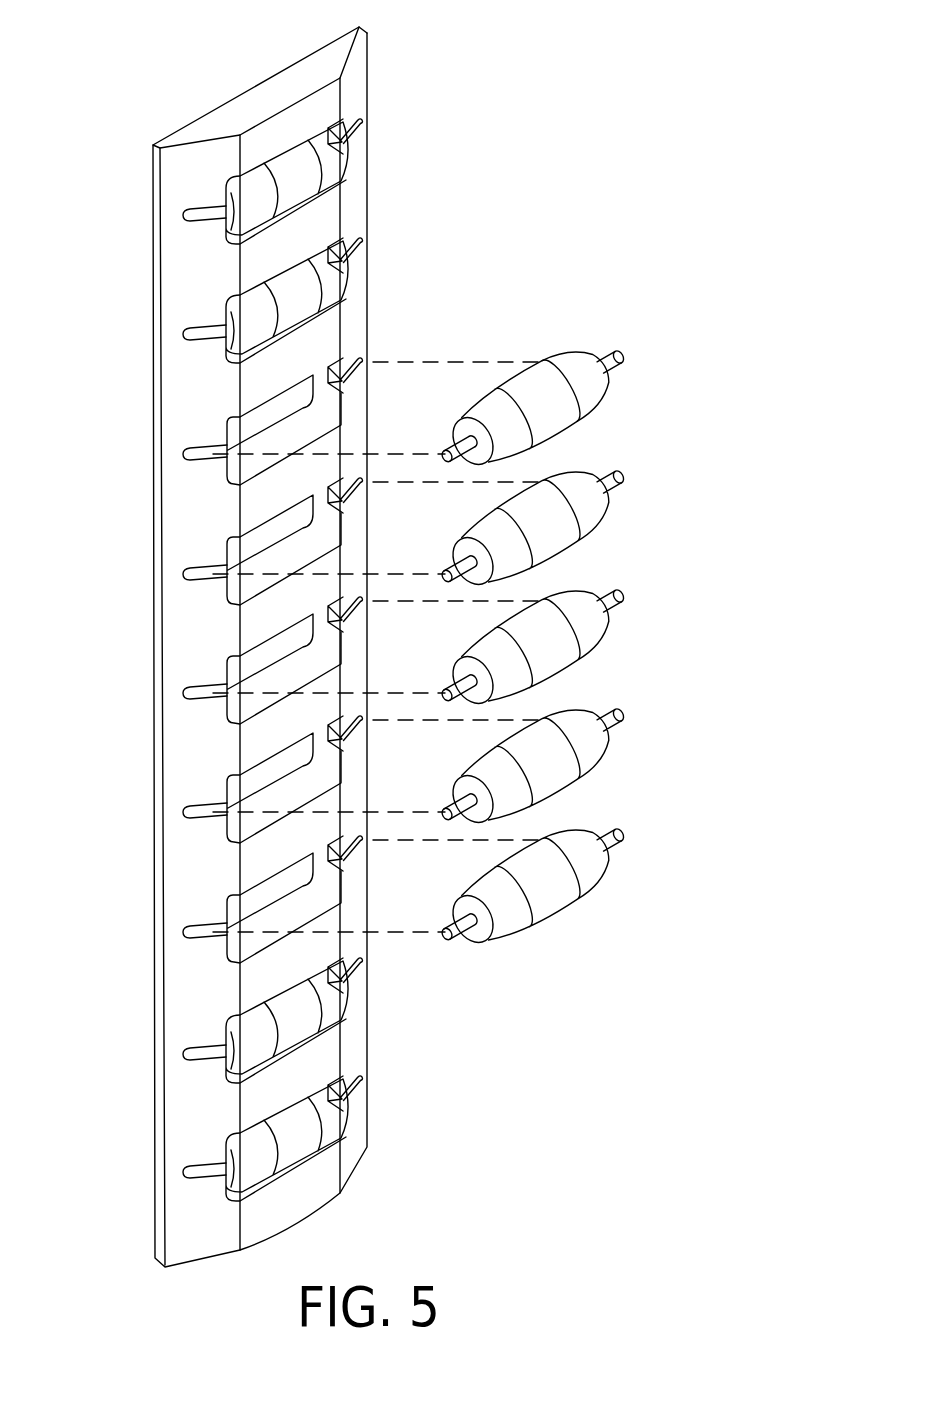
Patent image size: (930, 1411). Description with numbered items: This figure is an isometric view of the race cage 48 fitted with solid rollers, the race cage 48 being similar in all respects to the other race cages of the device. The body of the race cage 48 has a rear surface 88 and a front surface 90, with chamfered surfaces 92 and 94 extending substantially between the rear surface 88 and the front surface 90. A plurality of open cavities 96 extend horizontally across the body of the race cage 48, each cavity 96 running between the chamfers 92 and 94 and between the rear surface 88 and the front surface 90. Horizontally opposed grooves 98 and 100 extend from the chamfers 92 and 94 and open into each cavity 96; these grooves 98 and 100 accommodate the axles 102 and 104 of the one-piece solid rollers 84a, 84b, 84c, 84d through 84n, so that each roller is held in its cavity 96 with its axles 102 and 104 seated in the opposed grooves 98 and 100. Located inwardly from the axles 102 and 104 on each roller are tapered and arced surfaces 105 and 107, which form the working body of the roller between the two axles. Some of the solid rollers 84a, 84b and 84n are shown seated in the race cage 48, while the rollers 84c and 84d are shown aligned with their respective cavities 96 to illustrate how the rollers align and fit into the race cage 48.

The race cage 48 is at (168, 112).
The rear surface 88 is at (305, 53).
The front surface 90 is at (285, 125).
The chamfered surface 92 is at (188, 192).
The chamfered surface 94 is at (357, 85).
The open cavity 96 is at (240, 428).
The groove 98 is at (185, 461).
The groove 100 is at (357, 363).
The solid roller 84a is at (302, 182).
The solid roller 84b is at (300, 298).
The solid roller 84c is at (548, 422).
The solid roller 84d is at (550, 535).
The solid roller 84n is at (303, 1137).
The axle 102 is at (456, 437).
The axle 104 is at (612, 360).
The tapered and arced surface 105 is at (492, 417).
The tapered and arced surface 107 is at (569, 372).